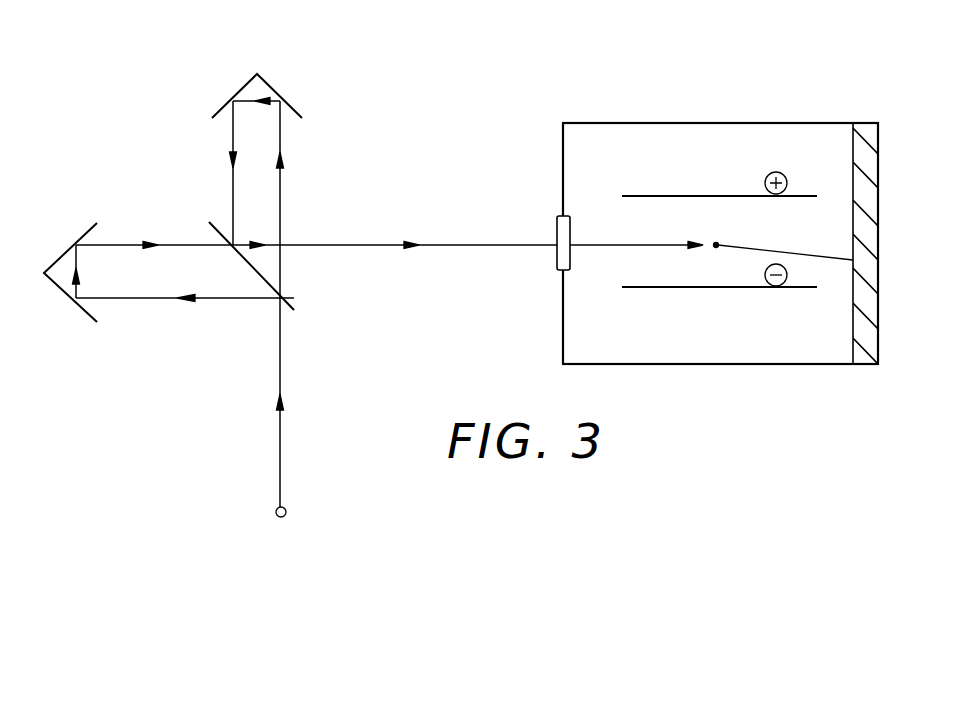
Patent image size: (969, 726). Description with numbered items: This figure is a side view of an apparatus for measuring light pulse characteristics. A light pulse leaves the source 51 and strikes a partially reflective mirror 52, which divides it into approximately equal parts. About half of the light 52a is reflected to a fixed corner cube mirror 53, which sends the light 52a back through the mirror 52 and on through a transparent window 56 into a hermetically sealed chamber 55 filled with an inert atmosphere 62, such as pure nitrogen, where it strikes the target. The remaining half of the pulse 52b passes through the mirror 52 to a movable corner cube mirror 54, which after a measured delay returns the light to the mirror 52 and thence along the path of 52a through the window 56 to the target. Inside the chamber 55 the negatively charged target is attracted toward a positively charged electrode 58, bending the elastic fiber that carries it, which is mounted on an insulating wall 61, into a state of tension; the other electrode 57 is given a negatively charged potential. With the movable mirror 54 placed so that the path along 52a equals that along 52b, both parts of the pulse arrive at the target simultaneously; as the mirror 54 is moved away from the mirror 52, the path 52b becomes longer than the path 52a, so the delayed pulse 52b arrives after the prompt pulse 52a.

The source 51 is at (276, 517).
The partially reflective mirror 52 is at (268, 290).
The reflected light / prompt pulse 52a is at (177, 242).
The transmitted light pulse / delayed pulse 52b is at (233, 147).
The fixed corner cube mirror 53 is at (68, 250).
The movable corner cube mirror 54 is at (248, 95).
The hermetically sealed chamber 55 is at (643, 118).
The transparent window 56 is at (557, 232).
The electrode 57 is at (638, 288).
The positively charged electrode 58 is at (675, 196).
The insulating wall 61 is at (877, 192).
The inert atmosphere 62 is at (727, 354).